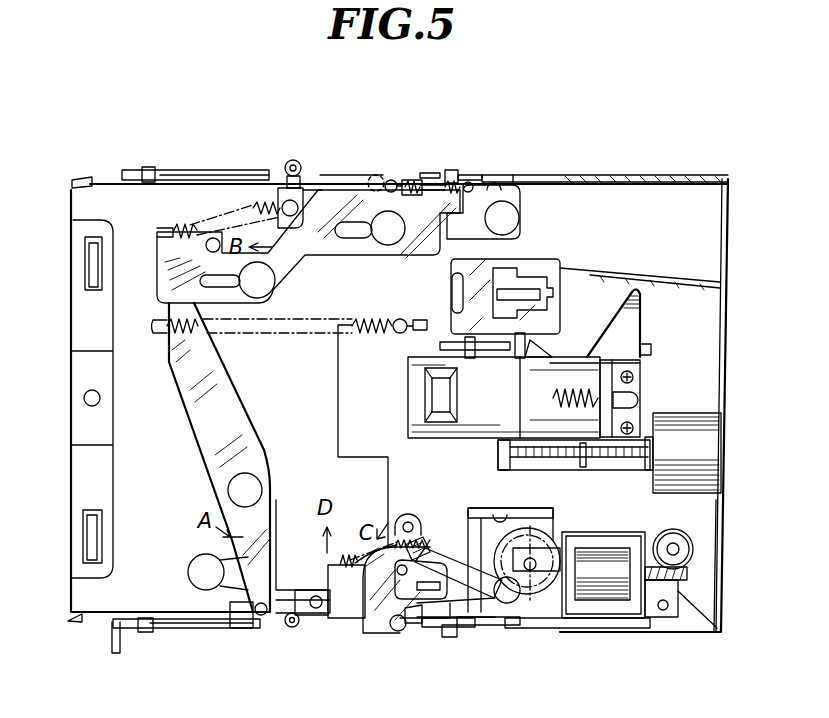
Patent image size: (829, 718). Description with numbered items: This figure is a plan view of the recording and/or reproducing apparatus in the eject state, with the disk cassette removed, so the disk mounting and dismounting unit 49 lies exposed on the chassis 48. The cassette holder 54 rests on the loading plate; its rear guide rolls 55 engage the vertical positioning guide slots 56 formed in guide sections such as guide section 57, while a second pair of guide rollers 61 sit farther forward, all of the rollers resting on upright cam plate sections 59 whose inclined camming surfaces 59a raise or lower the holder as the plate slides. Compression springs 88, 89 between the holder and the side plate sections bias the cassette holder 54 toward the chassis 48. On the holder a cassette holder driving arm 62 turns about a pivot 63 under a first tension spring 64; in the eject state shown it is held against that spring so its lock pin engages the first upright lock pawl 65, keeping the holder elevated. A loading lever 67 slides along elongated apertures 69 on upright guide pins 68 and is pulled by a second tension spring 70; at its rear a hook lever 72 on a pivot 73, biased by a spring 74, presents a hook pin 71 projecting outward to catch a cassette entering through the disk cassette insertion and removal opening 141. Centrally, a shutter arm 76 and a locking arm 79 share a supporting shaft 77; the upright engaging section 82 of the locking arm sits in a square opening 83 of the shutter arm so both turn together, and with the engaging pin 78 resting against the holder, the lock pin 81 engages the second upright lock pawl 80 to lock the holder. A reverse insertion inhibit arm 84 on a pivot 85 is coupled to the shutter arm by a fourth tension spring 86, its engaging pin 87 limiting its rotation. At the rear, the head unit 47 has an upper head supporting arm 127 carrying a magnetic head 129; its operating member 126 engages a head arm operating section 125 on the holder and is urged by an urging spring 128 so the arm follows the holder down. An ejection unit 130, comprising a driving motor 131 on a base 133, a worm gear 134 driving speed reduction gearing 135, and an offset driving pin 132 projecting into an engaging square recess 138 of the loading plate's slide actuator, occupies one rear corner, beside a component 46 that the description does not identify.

The holder 46 is at (692, 413).
The head unit 47 is at (603, 325).
The chassis 48 is at (683, 177).
The disk mounting and dismounting unit 49 is at (70, 186).
The cassette holder 54 is at (112, 183).
The guide rolls 55 is at (453, 170).
The vertical positioning guide slots 56 is at (470, 176).
The guide section 57 is at (500, 176).
The cam plate section 59 is at (172, 170).
The inclined camming surface 59a is at (205, 170).
The second pair of guide rollers 61 is at (148, 167).
The cassette holder driving arm 62 is at (186, 405).
The pivot 63 is at (260, 492).
The first tension spring 64 is at (305, 340).
The first upright lock pawl 65 is at (245, 618).
The loading lever 67 is at (323, 200).
The upright guide pins 68 is at (264, 283).
The elongated apertures 69 is at (357, 240).
The second tension spring 70 is at (224, 220).
The hook pin 71 is at (381, 176).
The hook lever 72 is at (519, 194).
The pivot 73 is at (516, 218).
The spring 74 is at (425, 180).
The shutter arm 76 is at (468, 545).
The supporting shaft 77 is at (517, 600).
The engaging pin 78 is at (408, 514).
The locking arm 79 is at (382, 605).
The second upright lock pawl 80 is at (418, 624).
The lock pin 81 is at (400, 631).
The upright engaging section 82 is at (432, 586).
The square opening 83 is at (398, 584).
The reverse insertion inhibit arm 84 is at (283, 570).
The pivot 85 is at (201, 565).
The fourth tension spring 86 is at (345, 557).
The engaging pin 87 is at (348, 618).
The compression spring 88 is at (294, 160).
The compression spring 89 is at (299, 623).
The head arm operating section 125 is at (560, 262).
The operating member 126 is at (553, 360).
The upper head supporting arm 127 is at (412, 370).
The urging spring 128 is at (636, 400).
The magnetic head 129 is at (430, 394).
The ejection unit 130 is at (570, 533).
The driving motor 131 is at (618, 592).
The offset driving pin 132 is at (535, 535).
The base 133 is at (668, 531).
The worm gear 134 is at (684, 577).
The speed reduction gearing 135 is at (557, 590).
The engaging square recess 138 is at (499, 516).
The disk cassette insertion and removal opening 141 is at (99, 327).